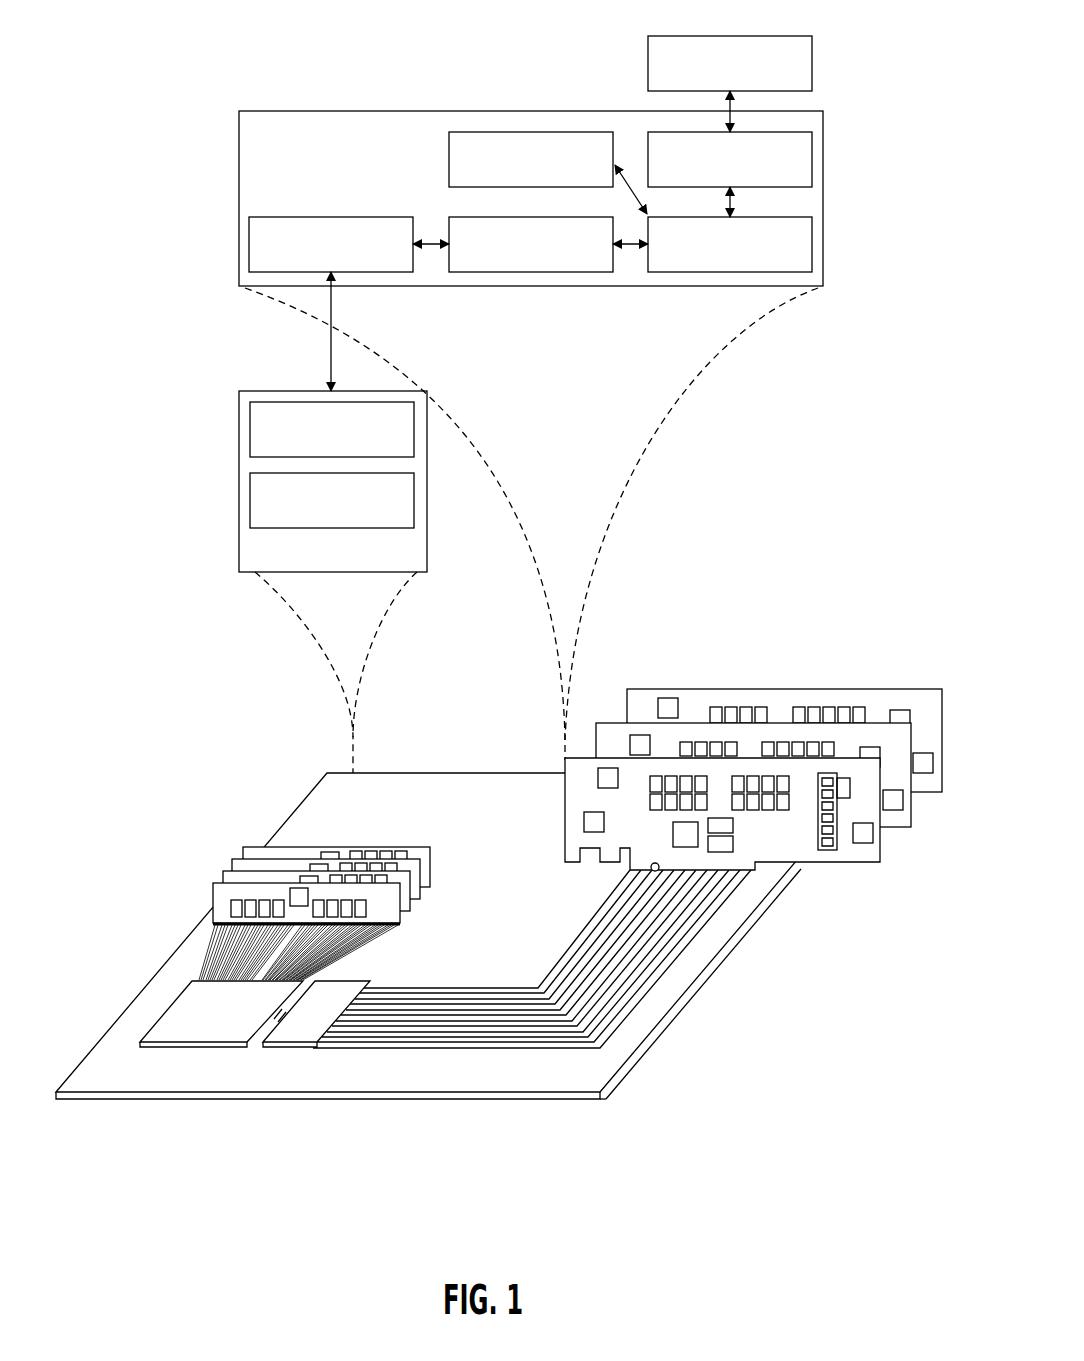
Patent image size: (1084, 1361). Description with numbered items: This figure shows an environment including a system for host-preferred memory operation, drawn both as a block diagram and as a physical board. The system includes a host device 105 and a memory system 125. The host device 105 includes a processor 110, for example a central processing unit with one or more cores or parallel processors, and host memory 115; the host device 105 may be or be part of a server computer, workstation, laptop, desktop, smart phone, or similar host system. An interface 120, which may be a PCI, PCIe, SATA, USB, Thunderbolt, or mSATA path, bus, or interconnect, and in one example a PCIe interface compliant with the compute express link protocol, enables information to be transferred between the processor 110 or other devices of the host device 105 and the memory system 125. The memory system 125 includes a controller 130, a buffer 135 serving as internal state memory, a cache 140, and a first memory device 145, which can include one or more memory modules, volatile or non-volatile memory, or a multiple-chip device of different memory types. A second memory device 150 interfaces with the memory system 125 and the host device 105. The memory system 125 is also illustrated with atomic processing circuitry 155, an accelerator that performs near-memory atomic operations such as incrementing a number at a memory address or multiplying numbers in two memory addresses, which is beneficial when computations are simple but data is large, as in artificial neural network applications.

The host device 105 is at (275, 391).
The processor 110 is at (250, 497).
The host memory 115 is at (250, 428).
The interface 120 is at (276, 1050).
The memory system 125 is at (239, 200).
The controller 130 is at (325, 217).
The buffer 135 is at (449, 217).
The cache 140 is at (823, 243).
The first memory device 145 is at (823, 155).
The second memory device 150 is at (730, 36).
The atomic processing circuitry 155 is at (449, 152).